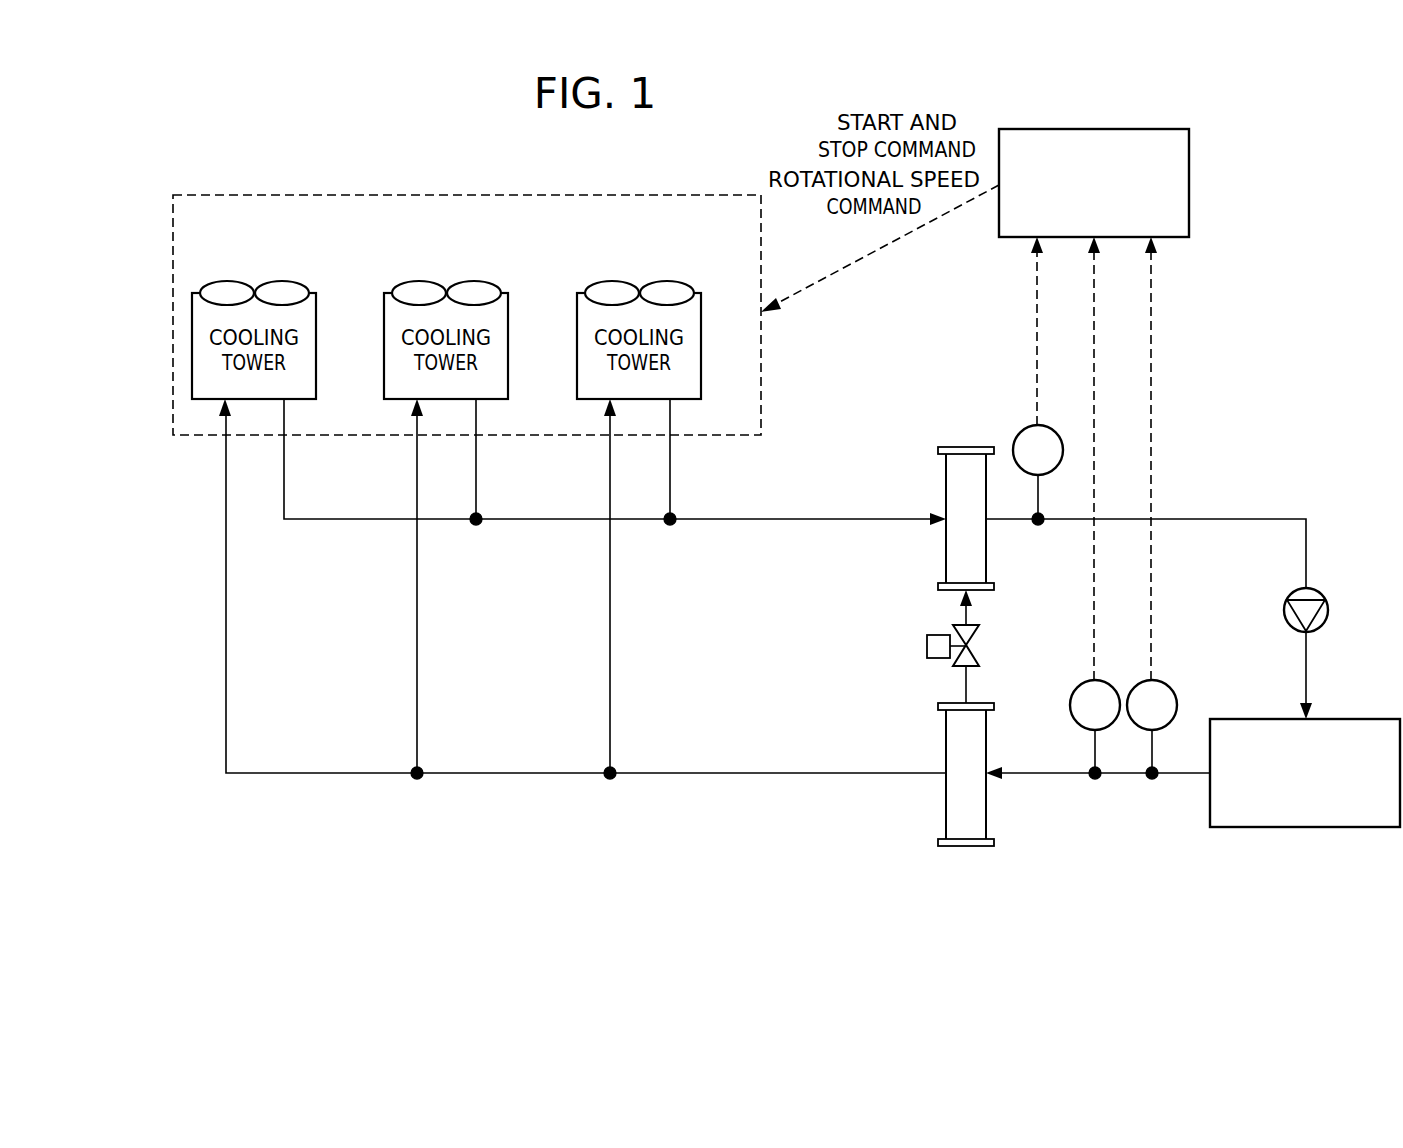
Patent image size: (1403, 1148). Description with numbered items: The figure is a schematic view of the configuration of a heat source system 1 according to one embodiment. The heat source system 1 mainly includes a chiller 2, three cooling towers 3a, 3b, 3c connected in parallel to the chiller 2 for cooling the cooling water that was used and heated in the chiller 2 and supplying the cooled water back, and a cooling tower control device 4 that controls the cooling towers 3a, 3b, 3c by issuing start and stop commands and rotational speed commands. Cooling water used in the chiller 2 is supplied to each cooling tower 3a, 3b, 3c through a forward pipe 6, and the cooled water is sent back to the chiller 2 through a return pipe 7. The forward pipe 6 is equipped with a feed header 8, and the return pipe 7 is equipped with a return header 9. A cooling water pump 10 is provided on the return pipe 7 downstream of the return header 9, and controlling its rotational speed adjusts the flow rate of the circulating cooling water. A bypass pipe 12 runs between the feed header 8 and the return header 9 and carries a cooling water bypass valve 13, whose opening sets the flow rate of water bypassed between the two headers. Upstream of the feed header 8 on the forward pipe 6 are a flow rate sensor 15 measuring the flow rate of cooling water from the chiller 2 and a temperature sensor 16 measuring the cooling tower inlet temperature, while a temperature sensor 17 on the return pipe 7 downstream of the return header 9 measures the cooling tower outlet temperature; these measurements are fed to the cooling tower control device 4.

The heat source system 1 is at (260, 180).
The chiller 2 is at (1306, 828).
The cooling tower 3a is at (680, 282).
The cooling tower 3b is at (489, 282).
The cooling tower 3c is at (297, 282).
The cooling tower control device 4 is at (1190, 182).
The forward pipe 6 is at (837, 771).
The return pipe 7 is at (837, 517).
The feed header 8 is at (966, 846).
The return header 9 is at (966, 446).
The cooling water pump 10 is at (1329, 610).
The bypass pipe 12 is at (970, 686).
The cooling water bypass valve 13 is at (926, 650).
The flow rate sensor 15 is at (1164, 682).
The temperature sensor 16 is at (1104, 682).
The temperature sensor 17 is at (1047, 426).